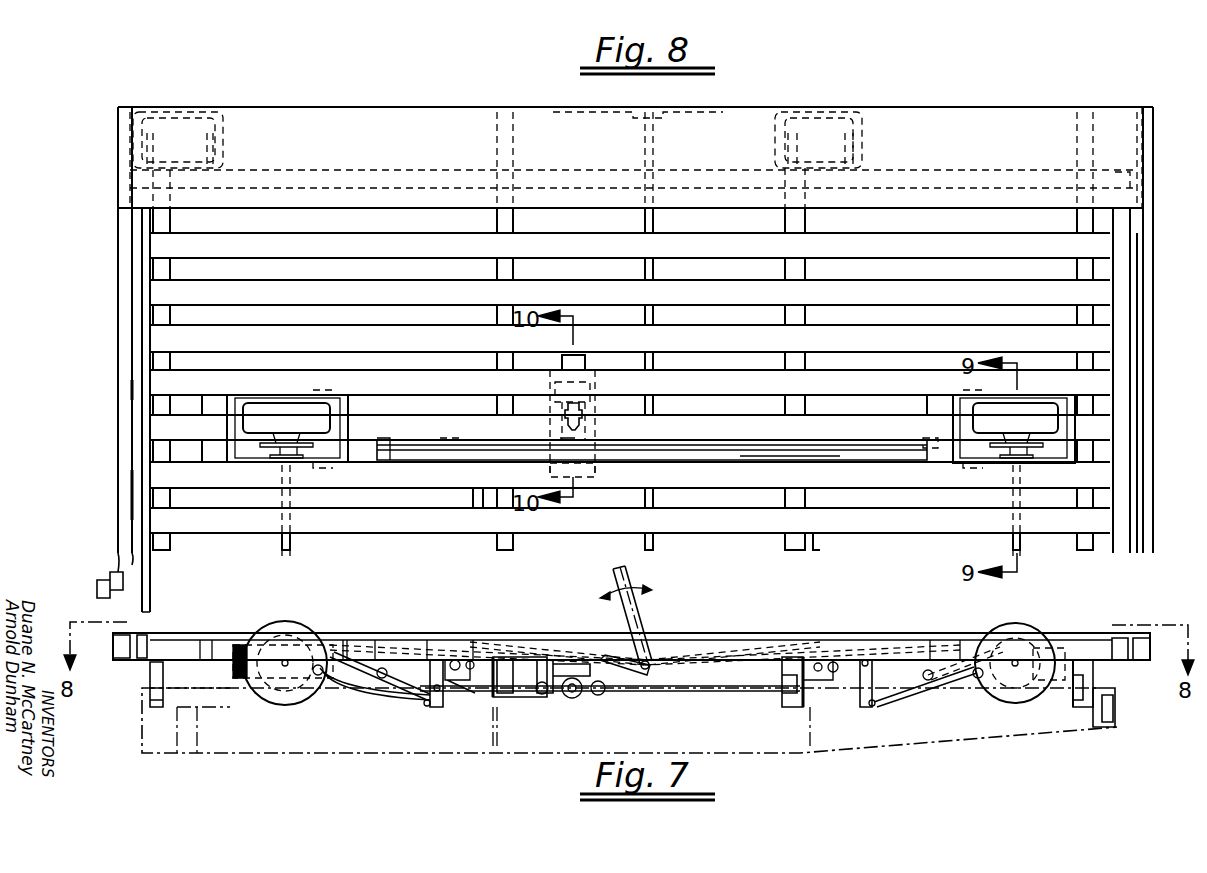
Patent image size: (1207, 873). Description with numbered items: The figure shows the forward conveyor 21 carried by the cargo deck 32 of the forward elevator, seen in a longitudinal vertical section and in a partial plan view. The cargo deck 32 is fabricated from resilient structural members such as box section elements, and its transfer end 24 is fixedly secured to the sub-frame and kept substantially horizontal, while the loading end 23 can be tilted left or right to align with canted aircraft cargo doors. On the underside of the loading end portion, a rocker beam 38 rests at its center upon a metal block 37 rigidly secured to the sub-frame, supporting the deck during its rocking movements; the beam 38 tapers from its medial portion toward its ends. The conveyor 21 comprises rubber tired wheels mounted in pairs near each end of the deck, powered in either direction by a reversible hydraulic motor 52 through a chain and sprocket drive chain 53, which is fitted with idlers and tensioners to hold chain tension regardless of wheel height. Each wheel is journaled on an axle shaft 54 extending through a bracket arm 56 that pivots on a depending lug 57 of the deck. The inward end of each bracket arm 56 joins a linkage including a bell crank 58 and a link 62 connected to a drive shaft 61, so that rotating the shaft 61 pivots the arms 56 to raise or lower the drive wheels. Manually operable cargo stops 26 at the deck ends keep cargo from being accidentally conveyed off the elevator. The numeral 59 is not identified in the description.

In FIG. 8, the forward conveyor 21 is at (270, 410).
In FIG. 7, the forward conveyor 21 is at (300, 632).
In FIG. 8, the loading end 23 is at (1153, 262).
In FIG. 8, the transfer end 24 is at (118, 229).
In FIG. 8, the cargo stop 26 is at (137, 376).
In FIG. 7, the cargo deck 32 is at (665, 634).
In FIG. 7, the metal block 37 is at (1073, 713).
In FIG. 7, the rocker beam 38 is at (1093, 676).
In FIG. 8, the reversible hydraulic motor 52 is at (586, 358).
In FIG. 8, the chain and sprocket drive chain 53 is at (890, 443).
In FIG. 7, the chain and sprocket drive chain 53 is at (590, 698).
In FIG. 8, the axle shaft 54 is at (290, 546).
In FIG. 7, the axle shaft 54 is at (283, 665).
In FIG. 7, the bracket arm 56 is at (243, 673).
In FIG. 7, the depending lug 57 is at (332, 687).
In FIG. 7, the bell crank 58 is at (437, 700).
In FIG. 7, the pivot bracket 59 is at (482, 690).
In FIG. 8, the drive shaft 61 is at (658, 140).
In FIG. 7, the drive shaft 61 is at (648, 660).
In FIG. 7, the link 62 is at (737, 647).